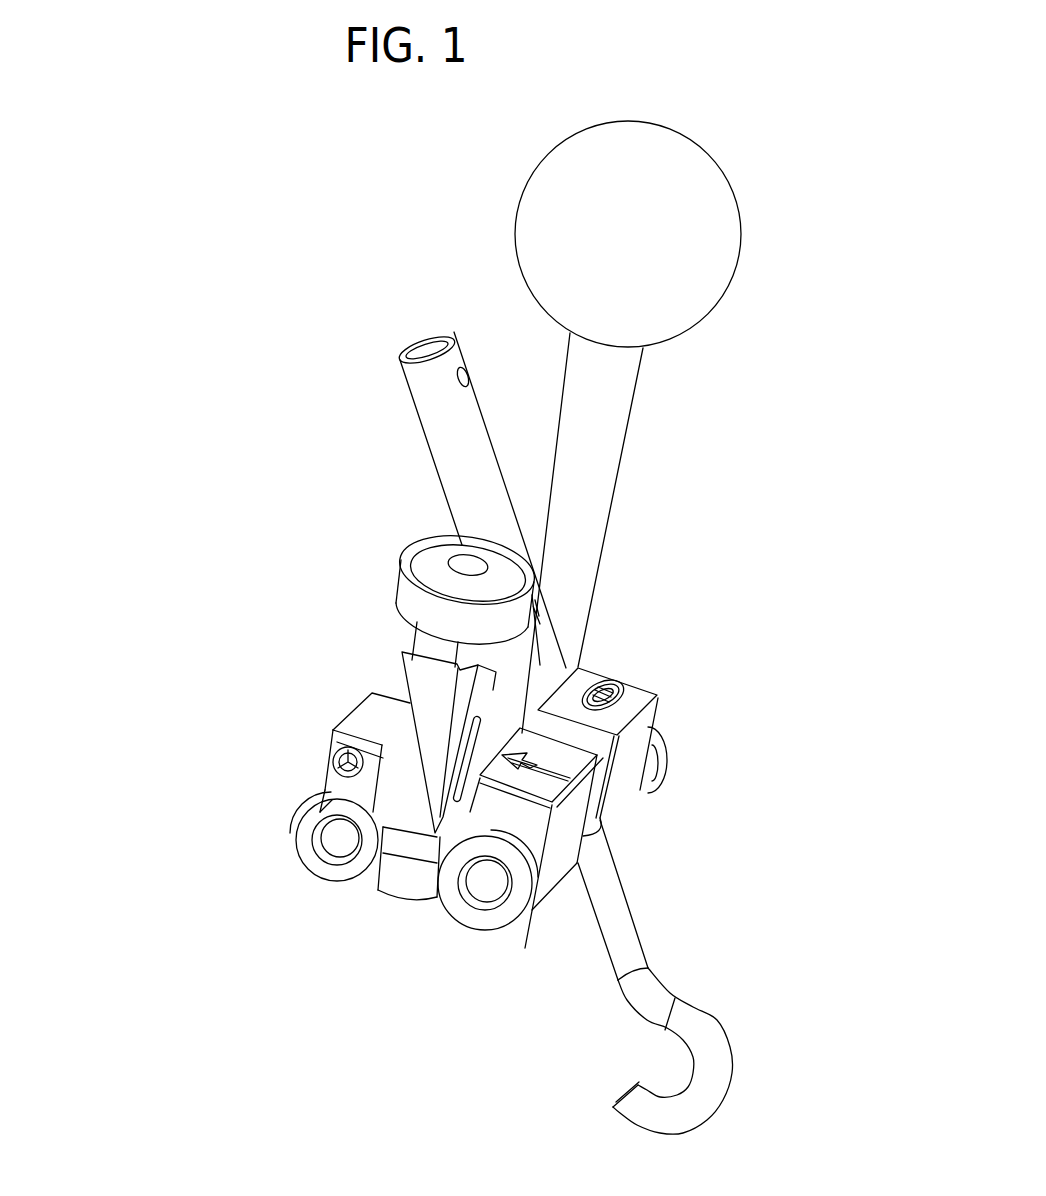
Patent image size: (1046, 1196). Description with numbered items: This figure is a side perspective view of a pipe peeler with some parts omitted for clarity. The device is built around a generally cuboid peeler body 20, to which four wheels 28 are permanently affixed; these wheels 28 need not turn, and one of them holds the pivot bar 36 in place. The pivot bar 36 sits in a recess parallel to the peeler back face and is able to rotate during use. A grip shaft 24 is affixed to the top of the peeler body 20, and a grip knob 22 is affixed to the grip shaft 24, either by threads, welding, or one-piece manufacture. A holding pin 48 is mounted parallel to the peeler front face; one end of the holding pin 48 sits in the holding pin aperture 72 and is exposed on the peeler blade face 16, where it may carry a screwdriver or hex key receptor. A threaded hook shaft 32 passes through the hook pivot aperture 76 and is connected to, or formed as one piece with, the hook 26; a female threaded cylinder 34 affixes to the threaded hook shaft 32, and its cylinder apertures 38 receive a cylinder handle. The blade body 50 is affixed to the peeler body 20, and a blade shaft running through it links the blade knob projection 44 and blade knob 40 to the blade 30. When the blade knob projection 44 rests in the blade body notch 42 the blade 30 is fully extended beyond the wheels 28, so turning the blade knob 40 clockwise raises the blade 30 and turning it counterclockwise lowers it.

The peeler blade face 16 is at (520, 927).
The peeler body 20 is at (350, 713).
The grip knob 22 is at (740, 205).
The grip shaft 24 is at (622, 455).
The hook 26 is at (720, 1030).
The wheels 28 is at (663, 743).
The blade 30 is at (379, 893).
The threaded hook shaft 32 is at (622, 873).
The female threaded cylinder 34 is at (381, 416).
The pivot bar 36 is at (628, 732).
The cylinder apertures 38 is at (467, 373).
The blade knob 40 is at (400, 589).
The blade body notch 42 is at (497, 667).
The blade knob projection 44 is at (425, 648).
The holding pin 48 is at (330, 790).
The blade body 50 is at (335, 746).
The holding pin aperture 72 is at (328, 768).
The hook pivot aperture 76 is at (625, 697).